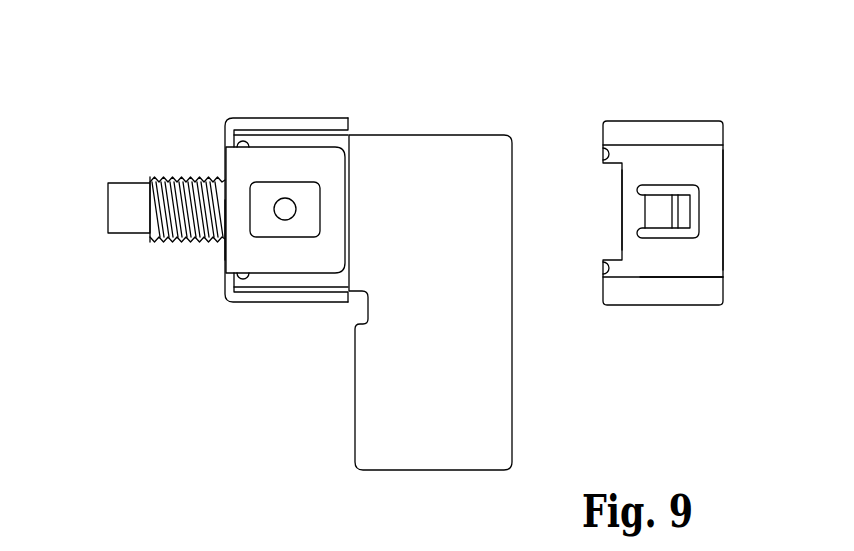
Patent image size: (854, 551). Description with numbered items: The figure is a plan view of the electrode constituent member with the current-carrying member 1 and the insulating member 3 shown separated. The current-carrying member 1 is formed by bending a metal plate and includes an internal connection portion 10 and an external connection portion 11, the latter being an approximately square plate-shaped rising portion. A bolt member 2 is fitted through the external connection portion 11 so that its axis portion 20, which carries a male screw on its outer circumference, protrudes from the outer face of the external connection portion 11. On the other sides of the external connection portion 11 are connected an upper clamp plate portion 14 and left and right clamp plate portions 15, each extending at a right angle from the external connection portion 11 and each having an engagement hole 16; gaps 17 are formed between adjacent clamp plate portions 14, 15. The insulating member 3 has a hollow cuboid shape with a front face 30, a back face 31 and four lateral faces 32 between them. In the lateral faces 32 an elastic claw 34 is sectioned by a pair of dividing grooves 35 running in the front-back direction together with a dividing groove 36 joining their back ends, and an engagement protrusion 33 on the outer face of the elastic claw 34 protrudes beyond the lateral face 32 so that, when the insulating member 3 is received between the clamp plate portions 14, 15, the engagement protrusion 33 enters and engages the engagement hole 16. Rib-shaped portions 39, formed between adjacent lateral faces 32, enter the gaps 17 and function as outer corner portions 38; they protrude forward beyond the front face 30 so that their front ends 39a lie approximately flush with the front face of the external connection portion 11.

The current-carrying member 1 is at (425, 418).
The bolt member 2 is at (123, 207).
The axis portion 20 is at (187, 209).
The internal connection portion 10 is at (483, 428).
The external connection portion 11 is at (225, 250).
The clamp plate portion 14 is at (327, 178).
The clamp plate portion 15 is at (270, 118).
The engagement hole 16 is at (303, 226).
The gap 17 is at (292, 140).
The insulating member 3 is at (723, 162).
The front face 30 is at (622, 190).
The back face 31 is at (723, 227).
The lateral face 32 is at (710, 260).
The engagement protrusion 33 is at (682, 225).
The elastic claw 34 is at (655, 211).
The dividing groove 35 is at (662, 187).
The dividing groove 36 is at (695, 202).
The outer corner portion 38 is at (633, 128).
The rib-shaped portion 39 is at (703, 293).
The front end 39a is at (604, 148).